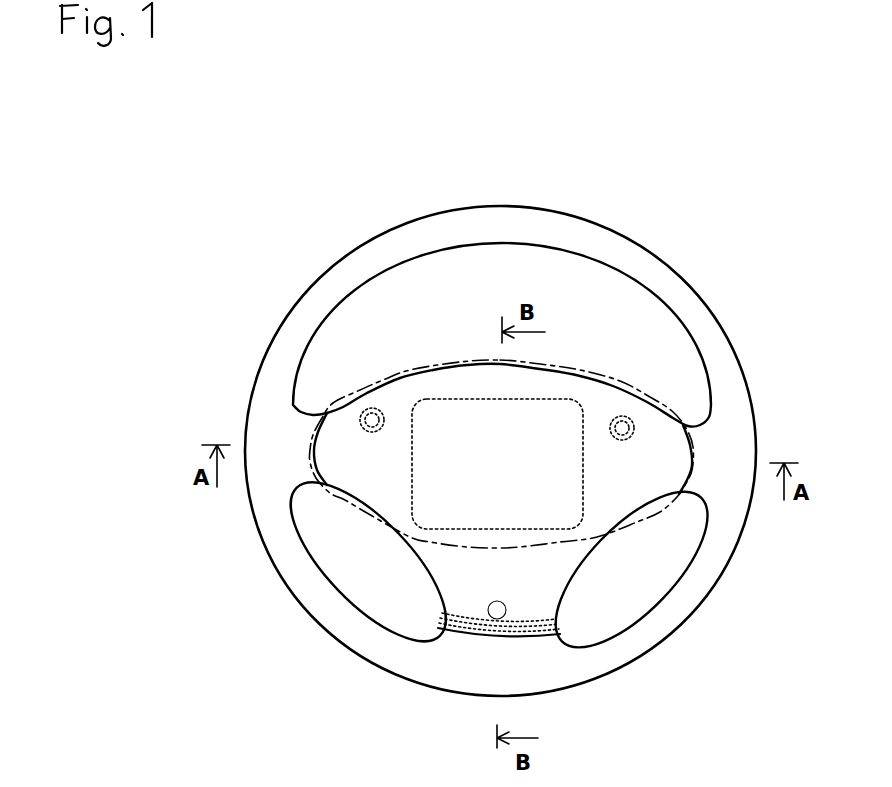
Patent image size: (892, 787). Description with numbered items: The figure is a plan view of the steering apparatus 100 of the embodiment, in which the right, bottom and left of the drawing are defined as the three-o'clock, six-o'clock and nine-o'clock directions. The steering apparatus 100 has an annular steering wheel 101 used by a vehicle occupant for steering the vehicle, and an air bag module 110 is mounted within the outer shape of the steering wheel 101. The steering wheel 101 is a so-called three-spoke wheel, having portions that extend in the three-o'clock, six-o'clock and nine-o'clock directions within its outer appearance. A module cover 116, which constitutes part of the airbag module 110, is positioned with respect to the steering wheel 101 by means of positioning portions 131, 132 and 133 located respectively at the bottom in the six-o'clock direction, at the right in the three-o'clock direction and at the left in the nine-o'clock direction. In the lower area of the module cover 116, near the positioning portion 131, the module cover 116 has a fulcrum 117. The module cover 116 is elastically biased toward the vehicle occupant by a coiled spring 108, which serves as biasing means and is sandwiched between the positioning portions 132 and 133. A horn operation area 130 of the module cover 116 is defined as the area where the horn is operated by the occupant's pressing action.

The steering apparatus 100 is at (522, 180).
The steering wheel 101 is at (665, 270).
The coiled spring 108 is at (358, 420).
The air bag module 110 is at (590, 548).
The module cover 116 is at (615, 503).
The fulcrum 117 is at (535, 637).
The horn operation area 130 is at (408, 372).
The positioning portion 131 is at (483, 637).
The positioning portion 132 is at (633, 418).
The positioning portion 133 is at (360, 412).